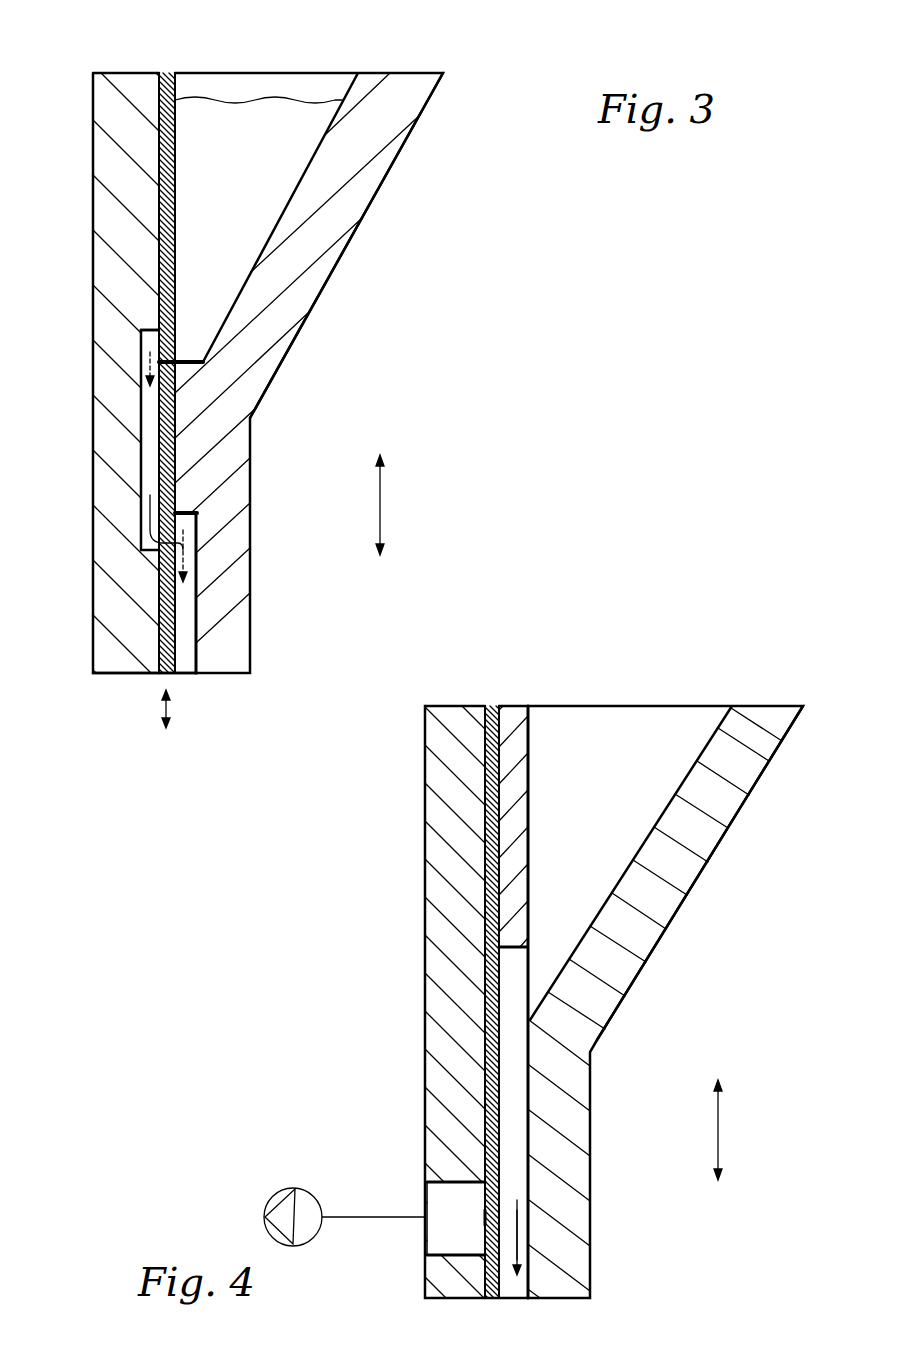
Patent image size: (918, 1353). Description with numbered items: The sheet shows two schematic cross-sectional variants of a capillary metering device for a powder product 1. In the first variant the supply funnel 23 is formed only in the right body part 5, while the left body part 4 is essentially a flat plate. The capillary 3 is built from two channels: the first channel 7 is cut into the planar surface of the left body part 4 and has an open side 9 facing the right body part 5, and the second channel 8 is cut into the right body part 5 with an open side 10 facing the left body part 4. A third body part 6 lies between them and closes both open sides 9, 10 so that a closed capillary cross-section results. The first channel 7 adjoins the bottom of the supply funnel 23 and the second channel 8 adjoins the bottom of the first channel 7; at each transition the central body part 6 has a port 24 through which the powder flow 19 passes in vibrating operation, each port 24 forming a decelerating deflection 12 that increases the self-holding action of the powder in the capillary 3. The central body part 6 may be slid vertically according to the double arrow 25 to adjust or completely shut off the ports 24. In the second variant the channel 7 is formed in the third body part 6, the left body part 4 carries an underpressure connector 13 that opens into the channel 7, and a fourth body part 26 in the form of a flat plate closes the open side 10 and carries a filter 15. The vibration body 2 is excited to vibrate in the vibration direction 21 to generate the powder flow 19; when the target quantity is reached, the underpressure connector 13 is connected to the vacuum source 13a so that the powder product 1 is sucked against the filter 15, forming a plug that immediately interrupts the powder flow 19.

In FIG. 3, the powder product 1 is at (238, 184).
In FIG. 4, the powder product 1 is at (620, 782).
In FIG. 3, the vibration body 2 is at (335, 270).
In FIG. 4, the vibration body 2 is at (703, 878).
In FIG. 3, the capillary 3 is at (138, 490).
In FIG. 4, the capillary 3 is at (512, 1108).
In FIG. 3, the left body part 4 is at (105, 160).
In FIG. 4, the left body part 4 is at (440, 812).
In FIG. 3, the right body part 5 is at (372, 172).
In FIG. 4, the right body part 5 is at (735, 780).
In FIG. 3, the third body part 6 is at (163, 72).
In FIG. 4, the third body part 6 is at (508, 712).
In FIG. 3, the first channel 7 is at (150, 462).
In FIG. 4, the first channel 7 is at (520, 1064).
In FIG. 3, the second channel 8 is at (180, 650).
In FIG. 3, the open side 9 is at (157, 413).
In FIG. 3, the open side 10 is at (190, 632).
In FIG. 4, the open side 10 is at (512, 1143).
In FIG. 3, the decelerating deflection 12 is at (168, 368).
In FIG. 4, the underpressure connector 13 is at (443, 1207).
In FIG. 4, the underpressure or vacuum source 13a is at (263, 1212).
In FIG. 4, the filter 15 is at (488, 1217).
In FIG. 3, the powder flow 19 is at (140, 330).
In FIG. 4, the powder flow 19 is at (517, 1237).
In FIG. 3, the vibration direction 21 is at (386, 510).
In FIG. 4, the vibration direction 21 is at (722, 1135).
In FIG. 3, the supply funnel 23 is at (276, 133).
In FIG. 4, the supply funnel 23 is at (654, 728).
In FIG. 3, the port 24 is at (170, 345).
In FIG. 3, the double arrow 25 is at (170, 706).
In FIG. 4, the fourth body part 26 is at (487, 706).